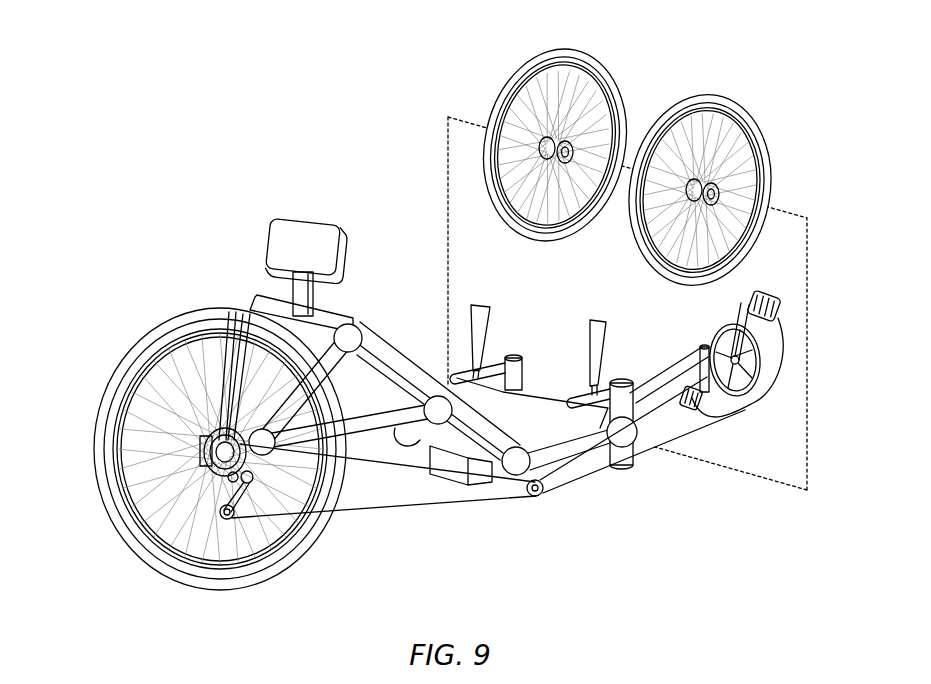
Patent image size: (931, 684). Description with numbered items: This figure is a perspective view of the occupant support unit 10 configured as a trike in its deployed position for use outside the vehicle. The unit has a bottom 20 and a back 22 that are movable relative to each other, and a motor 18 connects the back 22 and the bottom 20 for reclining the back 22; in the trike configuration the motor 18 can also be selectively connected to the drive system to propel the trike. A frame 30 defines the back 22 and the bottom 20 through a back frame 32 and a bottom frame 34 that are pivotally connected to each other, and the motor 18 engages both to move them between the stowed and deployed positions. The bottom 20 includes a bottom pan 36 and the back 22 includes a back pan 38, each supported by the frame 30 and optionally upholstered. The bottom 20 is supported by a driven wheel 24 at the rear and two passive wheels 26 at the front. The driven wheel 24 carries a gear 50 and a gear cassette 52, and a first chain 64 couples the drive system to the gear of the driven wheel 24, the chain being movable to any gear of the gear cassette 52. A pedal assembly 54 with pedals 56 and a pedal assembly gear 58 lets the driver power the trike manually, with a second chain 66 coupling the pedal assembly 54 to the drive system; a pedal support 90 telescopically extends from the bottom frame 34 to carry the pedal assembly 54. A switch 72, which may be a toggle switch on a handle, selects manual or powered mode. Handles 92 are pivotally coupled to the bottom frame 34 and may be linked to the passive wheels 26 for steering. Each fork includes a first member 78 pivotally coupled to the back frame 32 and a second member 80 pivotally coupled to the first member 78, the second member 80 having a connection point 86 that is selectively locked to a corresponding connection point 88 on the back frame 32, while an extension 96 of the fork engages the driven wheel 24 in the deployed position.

The occupant support unit 10 is at (291, 150).
The motor 18 is at (452, 467).
The bottom 20 is at (554, 370).
The back 22 is at (344, 294).
The driven wheel 24 is at (155, 555).
The passive wheels 26 is at (612, 73).
The frame 30 is at (380, 386).
The back frame 32 is at (393, 370).
The bottom frame 34 is at (562, 458).
The bottom pan 36 is at (516, 420).
The back pan 38 is at (373, 318).
The gear 50 is at (200, 452).
The gear cassette 52 is at (200, 483).
The pedal assembly 54 is at (754, 278).
The pedals 56 is at (748, 405).
The pedal assembly gear 58 is at (721, 328).
The first chain 64 is at (480, 502).
The second chain 66 is at (598, 468).
The switch 72 is at (606, 307).
The first member 78 is at (228, 335).
The second member 80 is at (205, 360).
The connection point 86 is at (245, 300).
The connection point 88 is at (350, 307).
The pedal support 90 is at (668, 370).
The handles 92 is at (490, 360).
The extension 96 is at (160, 385).